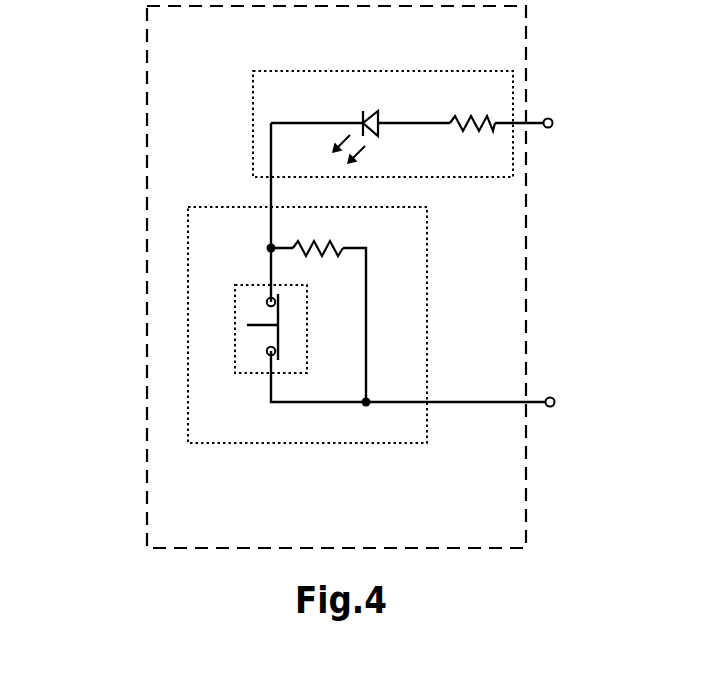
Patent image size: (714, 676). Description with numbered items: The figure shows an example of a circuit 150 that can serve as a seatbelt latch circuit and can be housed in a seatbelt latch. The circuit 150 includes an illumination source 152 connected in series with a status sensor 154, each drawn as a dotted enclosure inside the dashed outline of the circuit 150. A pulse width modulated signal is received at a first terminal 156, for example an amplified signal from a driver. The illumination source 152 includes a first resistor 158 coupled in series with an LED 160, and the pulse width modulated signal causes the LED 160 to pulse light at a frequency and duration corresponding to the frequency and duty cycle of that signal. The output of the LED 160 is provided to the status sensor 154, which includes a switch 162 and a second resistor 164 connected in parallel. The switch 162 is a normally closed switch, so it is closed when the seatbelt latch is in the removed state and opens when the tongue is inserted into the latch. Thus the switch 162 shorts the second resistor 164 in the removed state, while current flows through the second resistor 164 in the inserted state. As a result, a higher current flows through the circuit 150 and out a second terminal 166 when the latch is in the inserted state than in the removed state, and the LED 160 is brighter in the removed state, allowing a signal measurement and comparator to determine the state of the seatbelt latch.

The circuit 150 is at (141, 103).
The illumination source 152 is at (300, 69).
The status sensor 154 is at (252, 205).
The first terminal 156 is at (549, 118).
The resistor R1 158 is at (473, 136).
The LED 160 is at (377, 110).
The switch 162 is at (290, 282).
The second resistor R2 164 is at (333, 242).
The second terminal 166 is at (551, 397).